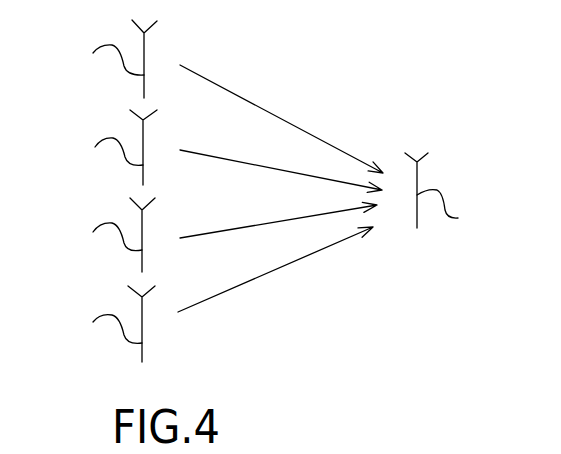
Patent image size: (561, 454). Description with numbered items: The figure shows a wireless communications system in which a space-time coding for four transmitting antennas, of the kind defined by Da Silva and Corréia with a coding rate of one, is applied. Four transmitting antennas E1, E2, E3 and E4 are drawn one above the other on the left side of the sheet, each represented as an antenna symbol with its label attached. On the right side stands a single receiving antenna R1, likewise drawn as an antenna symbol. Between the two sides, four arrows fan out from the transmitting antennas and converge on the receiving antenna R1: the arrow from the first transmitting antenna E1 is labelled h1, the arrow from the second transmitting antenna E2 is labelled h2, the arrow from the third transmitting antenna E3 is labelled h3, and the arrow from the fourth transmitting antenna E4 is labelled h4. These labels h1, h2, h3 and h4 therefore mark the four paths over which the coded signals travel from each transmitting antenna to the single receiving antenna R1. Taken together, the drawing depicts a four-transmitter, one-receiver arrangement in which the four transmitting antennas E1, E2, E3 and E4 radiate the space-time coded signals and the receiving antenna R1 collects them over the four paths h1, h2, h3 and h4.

The transmitting antenna E1 is at (107, 59).
The transmitting antenna E2 is at (108, 147).
The transmitting antenna E3 is at (106, 235).
The transmitting antenna E4 is at (106, 324).
The receiving antenna R1 is at (443, 190).
The channel from E1 to R1 h1 is at (281, 119).
The channel from E2 to R1 h2 is at (281, 166).
The channel from E3 to R1 h3 is at (278, 216).
The channel from E4 to R1 h4 is at (275, 269).